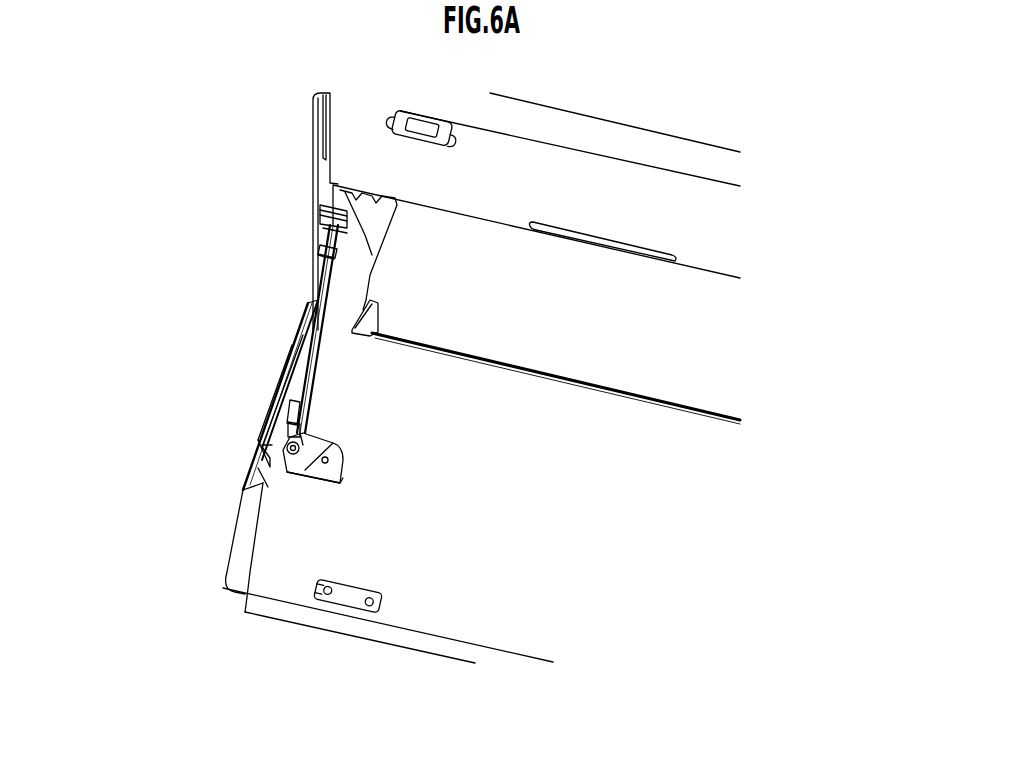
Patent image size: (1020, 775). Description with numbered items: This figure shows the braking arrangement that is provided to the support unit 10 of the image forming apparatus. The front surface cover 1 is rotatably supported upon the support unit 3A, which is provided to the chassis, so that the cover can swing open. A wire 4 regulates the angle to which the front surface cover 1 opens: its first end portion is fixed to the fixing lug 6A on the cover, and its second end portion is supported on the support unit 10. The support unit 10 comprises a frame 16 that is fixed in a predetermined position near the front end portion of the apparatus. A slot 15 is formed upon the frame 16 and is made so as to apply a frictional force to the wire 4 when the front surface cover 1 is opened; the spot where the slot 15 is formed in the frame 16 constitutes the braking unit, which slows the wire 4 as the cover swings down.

The front surface cover 1 is at (447, 602).
The support unit 10 is at (300, 261).
The slot 15 is at (330, 213).
The frame 16 is at (322, 244).
The support unit 3A is at (328, 352).
The wire 4 is at (303, 413).
The fixing lug 6A is at (297, 482).